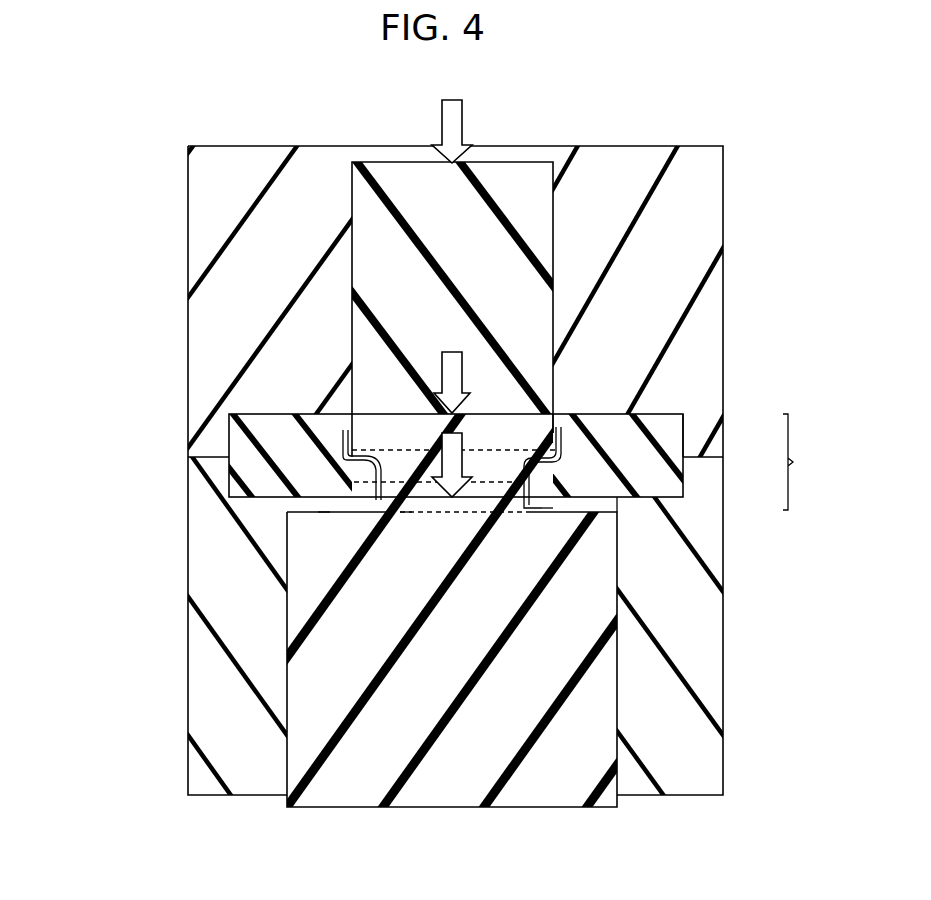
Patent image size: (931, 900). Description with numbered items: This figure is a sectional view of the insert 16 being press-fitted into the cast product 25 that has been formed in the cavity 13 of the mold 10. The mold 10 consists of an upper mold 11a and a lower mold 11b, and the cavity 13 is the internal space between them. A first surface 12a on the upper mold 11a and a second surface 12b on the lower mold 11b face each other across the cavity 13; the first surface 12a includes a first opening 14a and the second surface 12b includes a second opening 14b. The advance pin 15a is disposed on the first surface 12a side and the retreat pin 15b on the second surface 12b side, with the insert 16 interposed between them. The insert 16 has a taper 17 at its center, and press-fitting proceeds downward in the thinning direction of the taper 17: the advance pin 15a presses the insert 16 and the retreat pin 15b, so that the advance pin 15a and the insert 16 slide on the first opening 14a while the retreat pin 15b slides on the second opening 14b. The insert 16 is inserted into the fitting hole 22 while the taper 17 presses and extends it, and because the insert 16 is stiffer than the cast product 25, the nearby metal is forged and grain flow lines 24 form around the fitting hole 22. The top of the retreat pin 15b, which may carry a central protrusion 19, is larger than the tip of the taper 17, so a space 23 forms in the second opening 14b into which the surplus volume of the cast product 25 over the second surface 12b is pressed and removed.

The mold 10 is at (88, 146).
The upper mold 11a is at (188, 276).
The lower mold 11b is at (188, 668).
The first surface 12a is at (647, 414).
The second surface 12b is at (613, 498).
The cavity 13 is at (229, 420).
The first opening 14a is at (490, 415).
The second opening 14b is at (547, 520).
The advance pin 15a is at (385, 162).
The retreat pin 15b is at (322, 808).
The insert 16 is at (392, 423).
The taper 17 is at (392, 463).
The protrusion 19 is at (407, 507).
The fitting hole 22 is at (527, 480).
The space 23 is at (318, 510).
The grain flow lines 24 is at (560, 440).
The cast product 25 is at (805, 462).